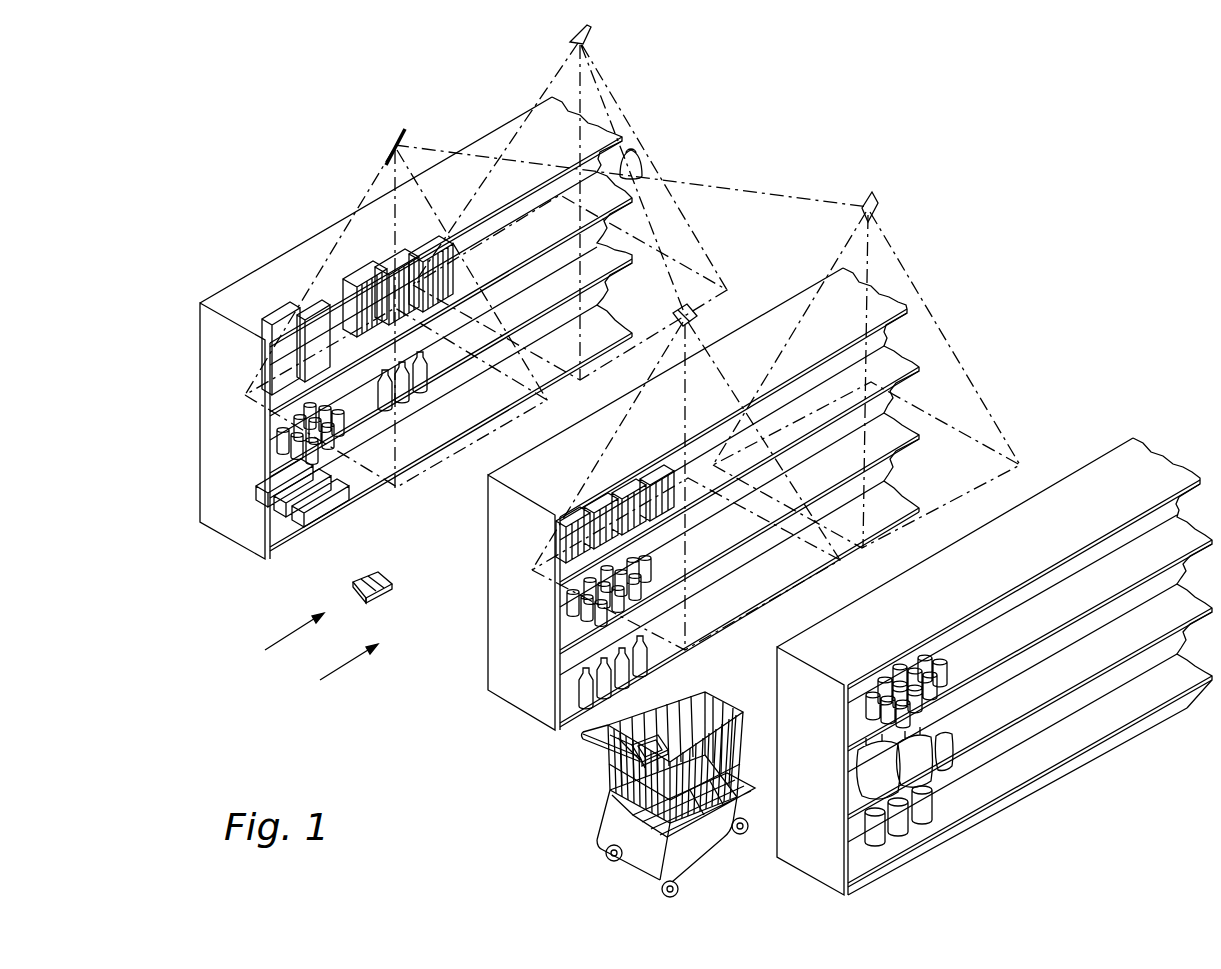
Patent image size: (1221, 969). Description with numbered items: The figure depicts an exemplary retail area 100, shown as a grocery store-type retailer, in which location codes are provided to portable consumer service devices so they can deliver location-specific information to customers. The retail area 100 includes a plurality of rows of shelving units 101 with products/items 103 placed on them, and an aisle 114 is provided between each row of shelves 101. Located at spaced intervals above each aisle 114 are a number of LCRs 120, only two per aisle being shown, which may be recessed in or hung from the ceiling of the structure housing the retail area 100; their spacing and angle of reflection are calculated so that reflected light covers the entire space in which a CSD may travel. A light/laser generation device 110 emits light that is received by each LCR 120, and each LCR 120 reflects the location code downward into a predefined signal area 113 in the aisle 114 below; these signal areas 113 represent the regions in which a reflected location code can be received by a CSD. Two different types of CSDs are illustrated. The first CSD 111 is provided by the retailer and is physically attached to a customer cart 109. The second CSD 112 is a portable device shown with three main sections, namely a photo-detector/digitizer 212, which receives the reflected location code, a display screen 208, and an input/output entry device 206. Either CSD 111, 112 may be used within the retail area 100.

The retail area 100 is at (908, 110).
The shelving units 101 is at (256, 444).
The products/items 103 is at (274, 334).
The customer cart 109 is at (706, 839).
The light/laser generation device (LGD) 110 is at (642, 170).
The first CSD 111 is at (630, 745).
The second CSD 112 is at (374, 594).
The signal area 113 is at (710, 264).
The aisle 114 is at (328, 662).
The LCR 120 is at (572, 43).
The input/output entry device 206 is at (352, 588).
The display screen 208 is at (382, 598).
The photo-detector/digitizer 212 is at (388, 590).